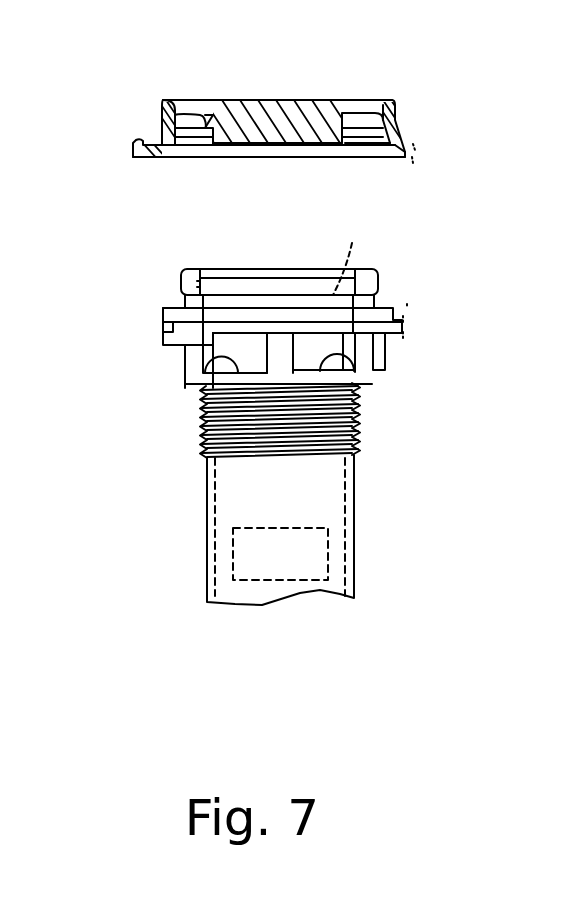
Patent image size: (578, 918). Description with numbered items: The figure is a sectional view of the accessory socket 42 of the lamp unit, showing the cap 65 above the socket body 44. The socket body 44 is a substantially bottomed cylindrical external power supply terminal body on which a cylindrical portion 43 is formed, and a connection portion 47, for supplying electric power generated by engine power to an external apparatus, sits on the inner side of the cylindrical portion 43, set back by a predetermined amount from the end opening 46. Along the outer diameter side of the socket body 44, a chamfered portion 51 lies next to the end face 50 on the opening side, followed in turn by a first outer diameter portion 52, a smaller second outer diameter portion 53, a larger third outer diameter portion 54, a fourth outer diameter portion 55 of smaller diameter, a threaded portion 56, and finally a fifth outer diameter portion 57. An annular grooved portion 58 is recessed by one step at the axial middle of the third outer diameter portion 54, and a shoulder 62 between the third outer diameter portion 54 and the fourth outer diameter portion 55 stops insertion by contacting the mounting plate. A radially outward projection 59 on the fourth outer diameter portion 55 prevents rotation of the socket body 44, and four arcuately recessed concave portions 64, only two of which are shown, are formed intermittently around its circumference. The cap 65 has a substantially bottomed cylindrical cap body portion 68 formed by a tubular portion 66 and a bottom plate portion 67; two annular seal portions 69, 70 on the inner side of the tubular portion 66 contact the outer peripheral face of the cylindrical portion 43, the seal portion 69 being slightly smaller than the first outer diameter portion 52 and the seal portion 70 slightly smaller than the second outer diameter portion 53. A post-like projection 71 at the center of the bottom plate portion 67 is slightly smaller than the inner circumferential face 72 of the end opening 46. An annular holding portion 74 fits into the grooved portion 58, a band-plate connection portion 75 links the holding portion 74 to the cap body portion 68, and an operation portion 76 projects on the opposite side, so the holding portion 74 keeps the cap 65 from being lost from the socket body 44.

The accessory socket 42 is at (312, 398).
The cylindrical portion 43 is at (385, 292).
The socket body 44 is at (360, 493).
The connection portion 47 is at (262, 529).
The end opening 46 is at (268, 243).
The end face 50 is at (208, 269).
The chamfered portion 51 is at (181, 275).
The first outer diameter portion 52 is at (181, 296).
The second outer diameter portion 53 is at (178, 301).
The third outer diameter portion 54 is at (163, 338).
The fourth outer diameter portion 55 is at (205, 372).
The threaded portion 56 is at (357, 430).
The fifth outer diameter portion 57 is at (207, 492).
The annular grooved portion 58 is at (163, 326).
The projection 59 is at (385, 355).
The shoulder 62 is at (186, 346).
The arcuately recessed concave portions 64 is at (210, 372).
The cap 65 is at (276, 102).
The tubular portion 66 is at (162, 125).
The bottom plate portion 67 is at (260, 100).
The cap body portion 68 is at (388, 96).
The seal portion 69 is at (198, 126).
The seal portion 70 is at (192, 150).
The post-like projection 71 is at (288, 137).
The inner circumferential face 72 is at (352, 251).
The holding portion 74 is at (269, 365).
The connection portion 75 is at (398, 143).
The operation portion 76 is at (132, 146).